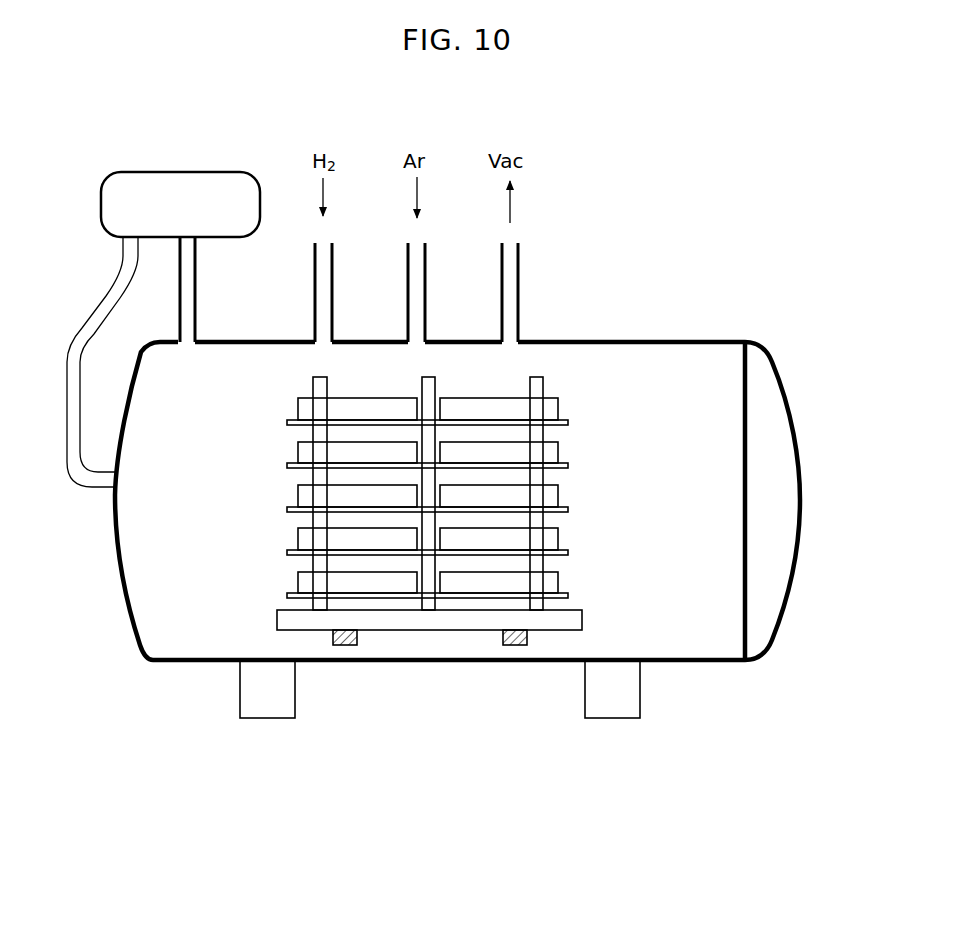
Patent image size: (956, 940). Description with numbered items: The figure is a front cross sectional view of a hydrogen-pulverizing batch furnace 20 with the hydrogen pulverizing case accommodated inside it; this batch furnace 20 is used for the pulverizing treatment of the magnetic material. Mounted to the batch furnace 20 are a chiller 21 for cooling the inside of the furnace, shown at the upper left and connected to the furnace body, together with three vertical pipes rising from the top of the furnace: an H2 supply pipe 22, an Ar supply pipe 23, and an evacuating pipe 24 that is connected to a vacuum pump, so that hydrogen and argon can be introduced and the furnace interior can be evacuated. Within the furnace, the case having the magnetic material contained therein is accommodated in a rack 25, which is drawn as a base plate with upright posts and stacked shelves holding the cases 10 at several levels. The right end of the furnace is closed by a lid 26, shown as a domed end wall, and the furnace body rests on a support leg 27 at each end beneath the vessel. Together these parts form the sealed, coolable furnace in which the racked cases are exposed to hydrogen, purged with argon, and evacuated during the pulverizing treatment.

The workpieces (sintered compacts) on trays 10 is at (548, 455).
The batch furnace 20 is at (699, 334).
The chiller 21 is at (182, 172).
The H2 supply pipe 22 is at (314, 273).
The Ar supply pipe 23 is at (427, 273).
The evacuating pipe 24 is at (515, 283).
The rack 25 is at (576, 617).
The lid 26 is at (787, 483).
The support leg 27 is at (268, 710).